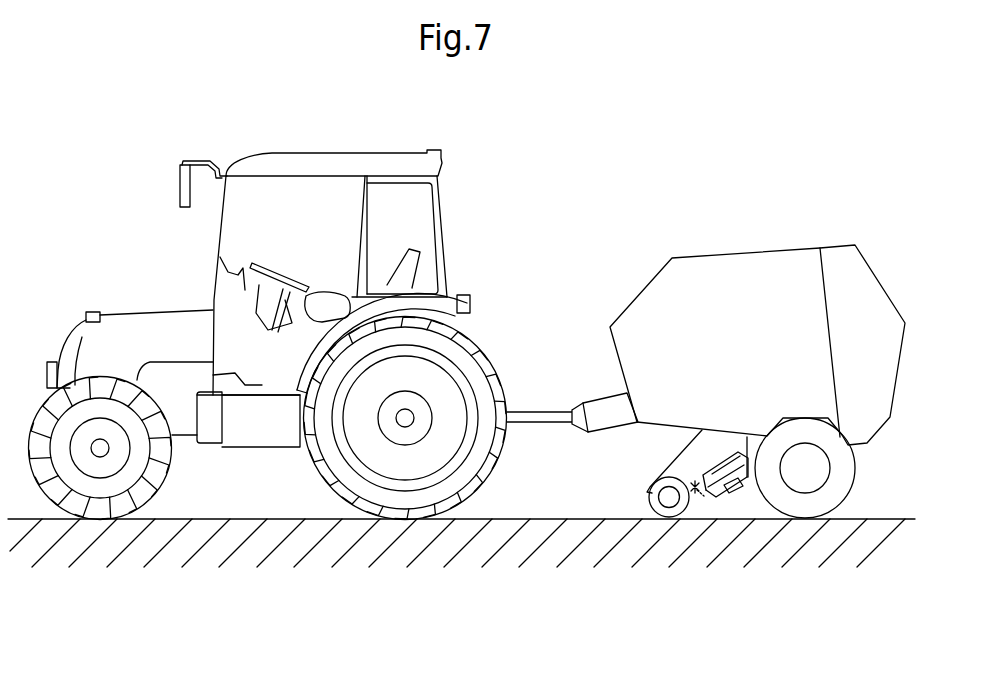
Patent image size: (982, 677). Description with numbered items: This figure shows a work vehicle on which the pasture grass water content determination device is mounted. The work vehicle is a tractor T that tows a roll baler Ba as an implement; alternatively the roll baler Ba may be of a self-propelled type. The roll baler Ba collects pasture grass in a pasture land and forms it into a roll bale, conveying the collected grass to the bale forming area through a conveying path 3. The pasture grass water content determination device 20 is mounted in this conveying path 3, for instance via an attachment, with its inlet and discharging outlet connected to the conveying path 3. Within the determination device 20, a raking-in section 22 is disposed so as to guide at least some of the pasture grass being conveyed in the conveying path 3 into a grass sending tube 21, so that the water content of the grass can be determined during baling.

The tractor T is at (347, 154).
The roll baler Ba is at (783, 248).
The conveying path 3 is at (690, 463).
The pasture grass water content determination device 20 is at (748, 500).
The grass sending tube 21 is at (722, 497).
The raking-in section 22 is at (703, 500).